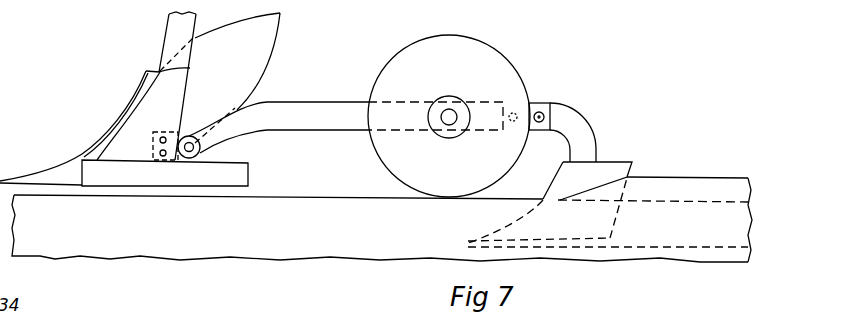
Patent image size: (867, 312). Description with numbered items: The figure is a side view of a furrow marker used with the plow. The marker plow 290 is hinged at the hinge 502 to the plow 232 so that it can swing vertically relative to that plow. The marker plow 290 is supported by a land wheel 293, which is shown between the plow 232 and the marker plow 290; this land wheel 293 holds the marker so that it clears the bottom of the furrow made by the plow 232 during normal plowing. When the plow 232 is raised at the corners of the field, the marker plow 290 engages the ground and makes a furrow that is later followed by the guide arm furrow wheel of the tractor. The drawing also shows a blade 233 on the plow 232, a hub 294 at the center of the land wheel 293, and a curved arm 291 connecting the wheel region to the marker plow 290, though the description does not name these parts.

The plow 232 is at (250, 57).
The blade 233 is at (183, 32).
The hinge 502 is at (200, 149).
The land wheel 293 is at (400, 165).
The hub 294 is at (449, 117).
The arm 291 is at (575, 132).
The marker plow 290 is at (610, 170).